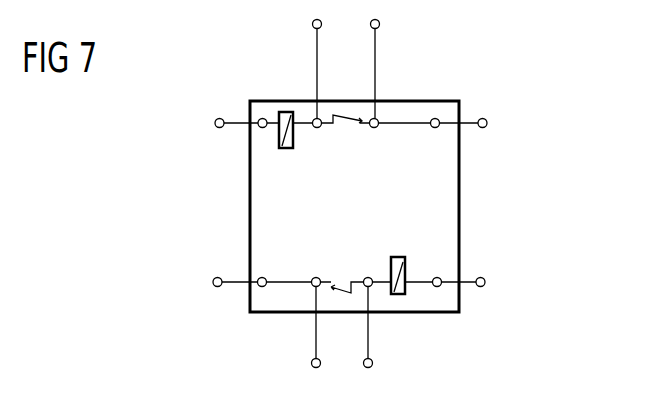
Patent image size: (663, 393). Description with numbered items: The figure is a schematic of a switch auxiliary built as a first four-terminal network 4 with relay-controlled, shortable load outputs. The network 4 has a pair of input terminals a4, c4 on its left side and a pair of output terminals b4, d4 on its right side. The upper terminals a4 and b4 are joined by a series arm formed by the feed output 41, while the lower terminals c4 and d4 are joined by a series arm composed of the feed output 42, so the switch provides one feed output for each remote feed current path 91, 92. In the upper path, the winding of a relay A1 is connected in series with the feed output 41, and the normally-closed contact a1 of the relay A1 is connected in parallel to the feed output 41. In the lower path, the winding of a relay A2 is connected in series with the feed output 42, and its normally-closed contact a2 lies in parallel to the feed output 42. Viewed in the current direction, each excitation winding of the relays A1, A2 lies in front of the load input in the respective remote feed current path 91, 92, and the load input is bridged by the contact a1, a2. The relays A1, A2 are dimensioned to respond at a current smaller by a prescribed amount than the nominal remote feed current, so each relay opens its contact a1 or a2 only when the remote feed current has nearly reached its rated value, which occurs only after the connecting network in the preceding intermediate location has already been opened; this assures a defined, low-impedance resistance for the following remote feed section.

The first four-terminal network 4 is at (423, 113).
The feed output 41 is at (346, 68).
The feed output 42 is at (342, 332).
The remote feed current path 91 is at (237, 122).
The remote feed current path 92 is at (235, 283).
The normally-closed contact a1 is at (346, 136).
The normally-closed contact a2 is at (343, 293).
The relay A1 is at (283, 152).
The relay A2 is at (396, 261).
The input terminal a4 is at (207, 124).
The output terminal b4 is at (494, 124).
The input terminal c4 is at (205, 282).
The output terminal d4 is at (493, 282).